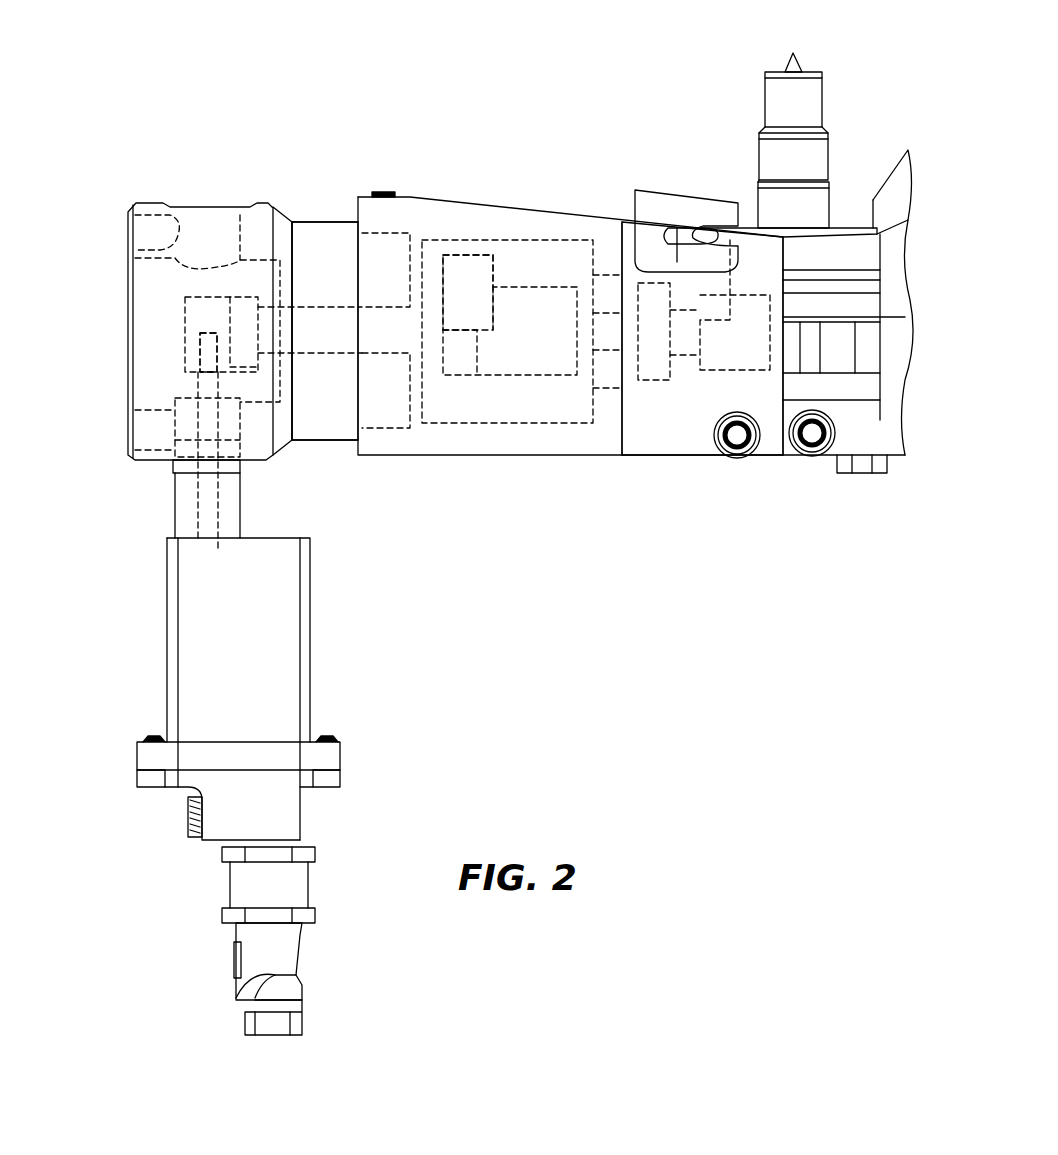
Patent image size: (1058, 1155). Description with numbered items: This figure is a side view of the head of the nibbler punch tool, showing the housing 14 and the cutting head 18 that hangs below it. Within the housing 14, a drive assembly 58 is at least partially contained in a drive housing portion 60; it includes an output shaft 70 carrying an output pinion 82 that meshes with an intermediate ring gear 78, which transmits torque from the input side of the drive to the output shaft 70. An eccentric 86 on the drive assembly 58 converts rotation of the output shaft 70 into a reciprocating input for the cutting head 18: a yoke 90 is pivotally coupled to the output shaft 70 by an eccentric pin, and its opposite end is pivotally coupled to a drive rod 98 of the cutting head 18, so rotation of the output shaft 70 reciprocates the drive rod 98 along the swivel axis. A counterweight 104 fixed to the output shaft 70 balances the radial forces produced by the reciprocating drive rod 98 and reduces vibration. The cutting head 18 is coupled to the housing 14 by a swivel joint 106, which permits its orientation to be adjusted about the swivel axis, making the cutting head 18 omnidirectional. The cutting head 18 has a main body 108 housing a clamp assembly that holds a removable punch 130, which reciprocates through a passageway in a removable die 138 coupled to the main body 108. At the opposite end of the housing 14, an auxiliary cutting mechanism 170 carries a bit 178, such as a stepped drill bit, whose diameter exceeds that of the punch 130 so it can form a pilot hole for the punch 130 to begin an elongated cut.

The housing 14 is at (440, 150).
The cutting head 18 is at (372, 627).
The drive assembly 58 is at (655, 425).
The drive housing portion 60 is at (604, 218).
The output shaft 70 is at (327, 320).
The intermediate ring gear 78 is at (750, 220).
The output pinion 82 is at (720, 250).
The eccentric 86 is at (148, 322).
The yoke 90 is at (180, 345).
The drive rod 98 is at (195, 510).
The counterweight 104 is at (470, 265).
The swivel joint 106 is at (175, 470).
The main body 108 is at (193, 664).
The punch 130 is at (258, 1003).
The die 138 is at (305, 885).
The auxiliary cutting mechanism 170 is at (853, 110).
The bit 178 is at (765, 100).